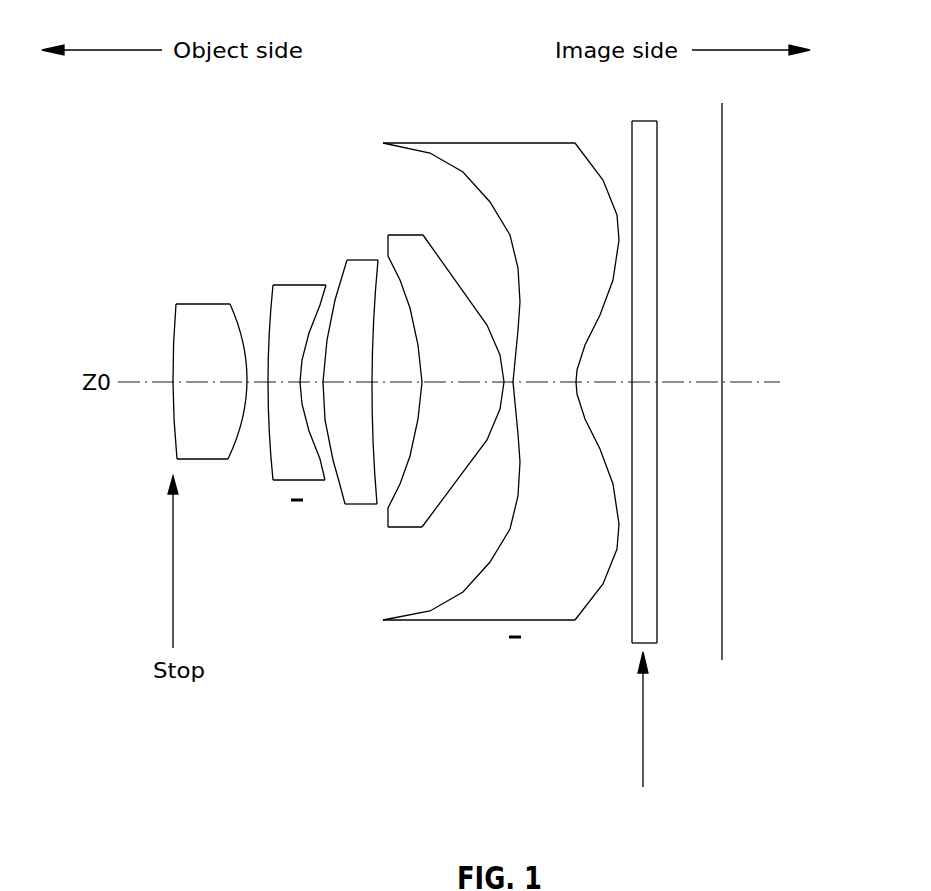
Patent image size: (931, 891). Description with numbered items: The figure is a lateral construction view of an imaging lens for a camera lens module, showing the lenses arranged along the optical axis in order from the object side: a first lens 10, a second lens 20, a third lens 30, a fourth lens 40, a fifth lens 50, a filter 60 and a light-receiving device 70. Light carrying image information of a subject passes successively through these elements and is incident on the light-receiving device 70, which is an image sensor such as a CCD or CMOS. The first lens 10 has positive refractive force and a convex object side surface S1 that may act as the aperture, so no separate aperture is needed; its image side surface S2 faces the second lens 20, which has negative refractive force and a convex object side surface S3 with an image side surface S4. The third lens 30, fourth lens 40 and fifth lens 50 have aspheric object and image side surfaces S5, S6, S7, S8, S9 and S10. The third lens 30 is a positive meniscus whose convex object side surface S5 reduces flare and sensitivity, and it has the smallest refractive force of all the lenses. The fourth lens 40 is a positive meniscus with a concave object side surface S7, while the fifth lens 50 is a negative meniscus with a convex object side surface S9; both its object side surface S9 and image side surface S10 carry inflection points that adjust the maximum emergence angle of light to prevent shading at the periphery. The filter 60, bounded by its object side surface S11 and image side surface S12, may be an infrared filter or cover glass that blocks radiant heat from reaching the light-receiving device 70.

The first lens 10 is at (205, 303).
The second lens 20 is at (298, 283).
The third lens 30 is at (357, 258).
The fourth lens 40 is at (405, 234).
The fifth lens 50 is at (478, 142).
The filter 60 is at (640, 121).
The light-receiving device 70 is at (722, 163).
The object side surface of the first lens S1 is at (176, 432).
The image side surface of the first lens S2 is at (243, 452).
The object side surface of the second lens S3 is at (270, 445).
The image side surface of the second lens S4 is at (322, 462).
The object side surface of the third lens S5 is at (338, 495).
The image side surface of the third lens S6 is at (377, 480).
The object side surface of the fourth lens S7 is at (398, 475).
The image side surface of the fourth lens S8 is at (452, 488).
The object side surface of the fifth lens S9 is at (470, 579).
The image side surface of the fifth lens S10 is at (590, 608).
The object side surface of the filter S11 is at (631, 618).
The image side surface of the filter S12 is at (658, 613).